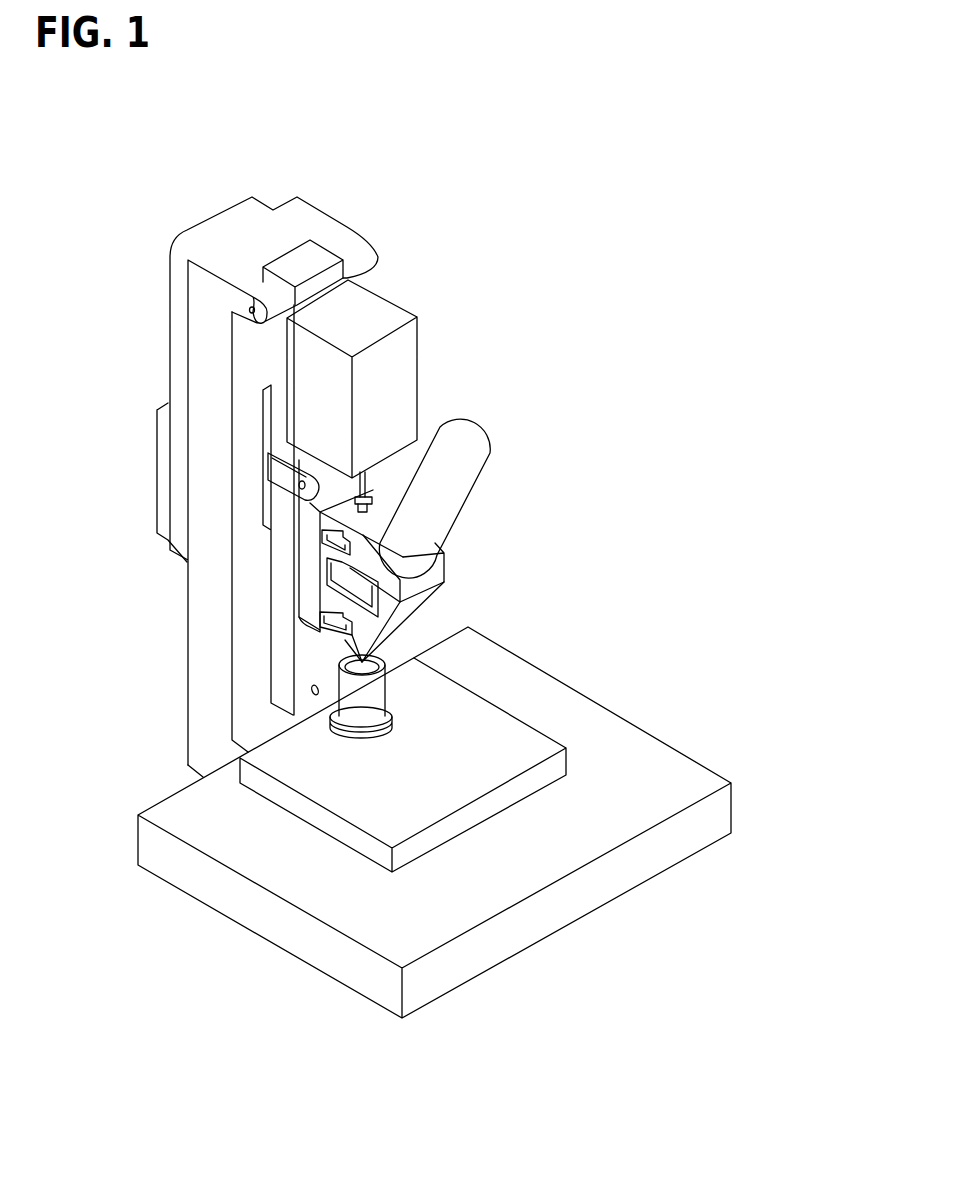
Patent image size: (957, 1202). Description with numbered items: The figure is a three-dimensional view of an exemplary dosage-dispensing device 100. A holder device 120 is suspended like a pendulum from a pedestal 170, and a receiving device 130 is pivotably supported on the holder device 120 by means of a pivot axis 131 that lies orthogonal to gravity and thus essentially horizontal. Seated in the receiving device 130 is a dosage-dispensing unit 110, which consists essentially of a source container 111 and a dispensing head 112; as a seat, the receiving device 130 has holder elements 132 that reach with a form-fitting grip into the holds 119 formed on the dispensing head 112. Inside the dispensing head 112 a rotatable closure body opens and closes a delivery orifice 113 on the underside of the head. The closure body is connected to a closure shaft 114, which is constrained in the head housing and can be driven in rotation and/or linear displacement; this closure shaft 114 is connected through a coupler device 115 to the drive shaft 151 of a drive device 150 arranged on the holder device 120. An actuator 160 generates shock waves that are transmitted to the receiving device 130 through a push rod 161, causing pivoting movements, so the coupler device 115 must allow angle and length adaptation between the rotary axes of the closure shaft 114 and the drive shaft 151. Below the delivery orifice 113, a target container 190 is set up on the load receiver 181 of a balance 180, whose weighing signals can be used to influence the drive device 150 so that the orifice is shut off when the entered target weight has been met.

The dosage-dispensing device 100 is at (566, 264).
The dosage-dispensing unit 110 is at (494, 577).
The source container 111 is at (400, 548).
The dispensing head 112 is at (410, 612).
The delivery orifice 113 is at (360, 672).
The closure shaft 114 is at (369, 508).
The coupler device 115 is at (371, 498).
The holds 119 is at (342, 640).
The holder device 120 is at (320, 258).
The receiving device 130 is at (306, 594).
The pivot axis 131 is at (300, 486).
The holder elements 132 is at (324, 632).
The drive device 150 is at (356, 318).
The drive shaft 151 is at (366, 478).
The actuator 160 is at (197, 240).
The push rod 161 is at (267, 530).
The pedestal 170 is at (208, 335).
The balance 180 is at (452, 787).
The load receiver 181 is at (394, 725).
The target container 190 is at (376, 694).